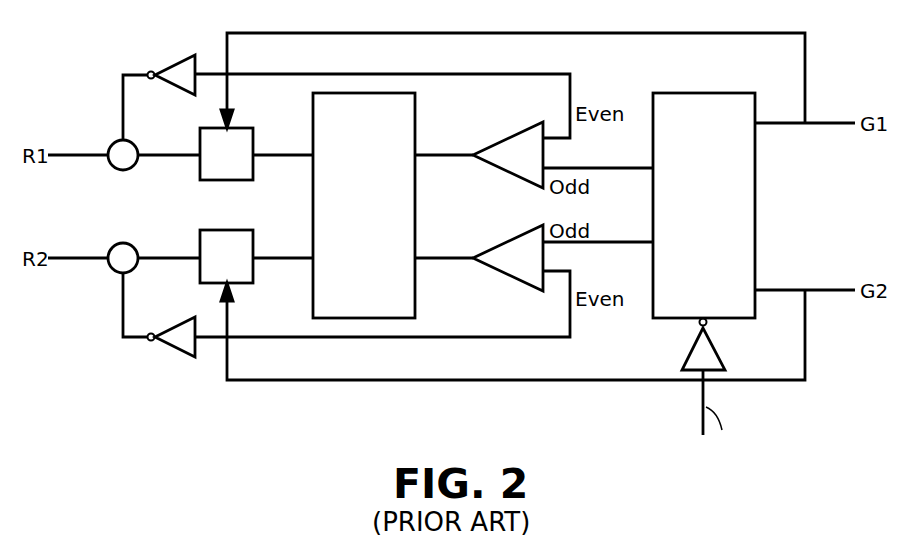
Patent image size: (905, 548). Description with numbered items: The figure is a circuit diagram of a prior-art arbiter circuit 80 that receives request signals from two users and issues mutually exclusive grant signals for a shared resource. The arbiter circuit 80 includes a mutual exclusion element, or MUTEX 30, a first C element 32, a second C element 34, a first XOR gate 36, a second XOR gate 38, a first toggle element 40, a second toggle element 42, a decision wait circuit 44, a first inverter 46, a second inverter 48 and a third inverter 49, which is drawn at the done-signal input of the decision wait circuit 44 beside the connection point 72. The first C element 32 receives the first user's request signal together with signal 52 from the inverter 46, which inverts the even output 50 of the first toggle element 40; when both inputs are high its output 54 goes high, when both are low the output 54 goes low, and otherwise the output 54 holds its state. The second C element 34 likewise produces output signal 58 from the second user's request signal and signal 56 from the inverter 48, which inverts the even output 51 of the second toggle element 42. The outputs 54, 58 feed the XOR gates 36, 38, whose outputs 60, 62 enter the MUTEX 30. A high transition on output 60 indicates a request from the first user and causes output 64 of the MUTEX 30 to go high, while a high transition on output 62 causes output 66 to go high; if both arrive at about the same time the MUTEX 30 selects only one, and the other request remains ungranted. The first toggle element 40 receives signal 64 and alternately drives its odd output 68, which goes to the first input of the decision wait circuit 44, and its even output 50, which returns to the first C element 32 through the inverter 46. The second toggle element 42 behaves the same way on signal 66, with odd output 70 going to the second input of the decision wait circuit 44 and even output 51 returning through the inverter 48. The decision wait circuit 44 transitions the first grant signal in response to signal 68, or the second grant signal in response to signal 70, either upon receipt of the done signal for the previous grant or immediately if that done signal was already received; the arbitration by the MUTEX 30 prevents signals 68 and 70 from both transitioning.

The mutual exclusion element (MUTEX) 30 is at (364, 205).
The first C element 32 is at (140, 149).
The second C element 34 is at (140, 252).
The first XOR gate 36 is at (245, 128).
The second XOR gate 38 is at (244, 230).
The first toggle element 40 is at (508, 155).
The second toggle element 42 is at (508, 258).
The decision wait circuit 44 is at (704, 205).
The first inverter 46 is at (175, 65).
The second inverter 48 is at (175, 350).
The third inverter 49 is at (690, 352).
The even output 50 is at (385, 74).
The even output 51 is at (385, 337).
The signal 52 is at (121, 128).
The output 54 is at (148, 159).
The signal 56 is at (121, 285).
The output signal 58 is at (148, 262).
The output 60 is at (265, 155).
The output 62 is at (265, 258).
The output 64 is at (442, 152).
The output 66 is at (432, 256).
The odd output 68 is at (597, 168).
The odd output 70 is at (597, 242).
The input terminal 72 is at (735, 322).
The arbiter circuit 80 is at (175, 412).